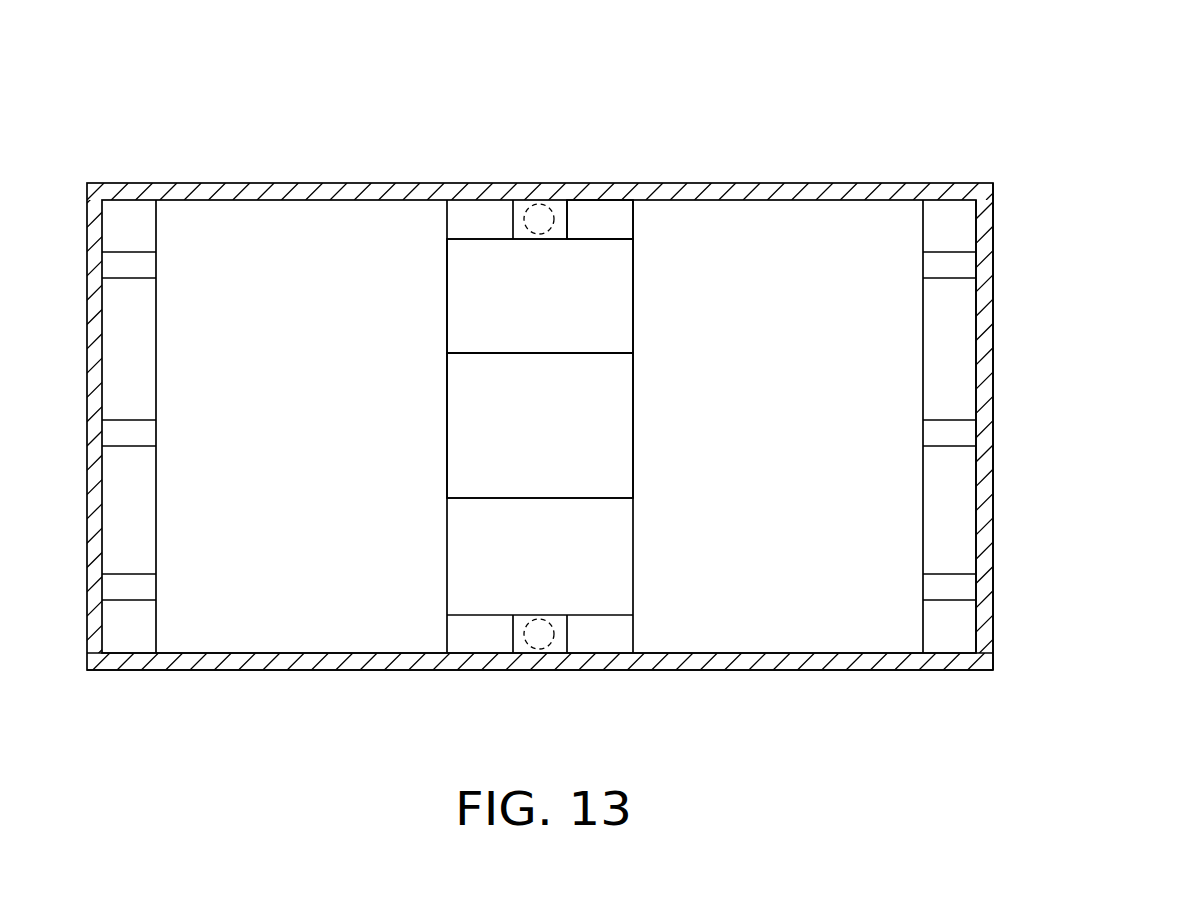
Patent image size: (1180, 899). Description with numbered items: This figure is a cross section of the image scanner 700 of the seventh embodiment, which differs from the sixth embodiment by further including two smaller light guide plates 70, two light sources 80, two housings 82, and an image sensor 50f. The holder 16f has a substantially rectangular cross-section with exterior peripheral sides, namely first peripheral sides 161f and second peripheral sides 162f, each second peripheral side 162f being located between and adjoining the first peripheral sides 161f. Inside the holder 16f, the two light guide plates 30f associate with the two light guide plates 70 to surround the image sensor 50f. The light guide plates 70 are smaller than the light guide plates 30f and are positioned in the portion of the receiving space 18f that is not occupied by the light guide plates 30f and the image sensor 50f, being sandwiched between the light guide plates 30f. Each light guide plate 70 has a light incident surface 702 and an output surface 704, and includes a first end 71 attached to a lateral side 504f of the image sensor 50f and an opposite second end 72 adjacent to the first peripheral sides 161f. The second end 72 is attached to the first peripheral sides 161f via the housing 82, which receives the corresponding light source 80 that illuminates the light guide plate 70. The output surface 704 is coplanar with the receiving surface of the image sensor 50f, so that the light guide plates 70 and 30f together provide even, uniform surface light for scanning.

The image scanner 700 is at (157, 95).
The holder 16f is at (1110, 602).
The first peripheral sides 161f is at (945, 663).
The second peripheral sides 162f is at (983, 600).
The light guide plates 30f is at (204, 243).
The image sensor 50f is at (593, 460).
The light guide plates 70 is at (465, 120).
The first end 71 is at (487, 350).
The second end 72 is at (493, 248).
The light sources 80 is at (543, 204).
The housings 82 is at (517, 207).
The light incident surface 702 is at (599, 238).
The output surface 704 is at (600, 275).
The lateral side 504f is at (600, 352).
The receiving space 18f is at (484, 633).